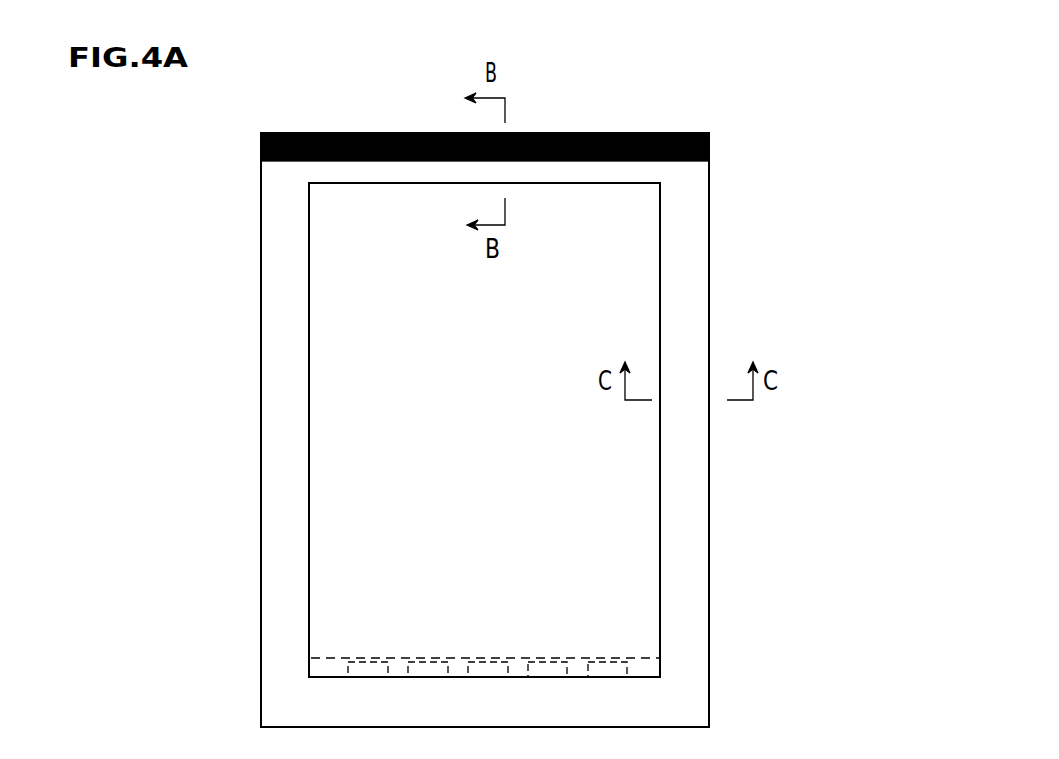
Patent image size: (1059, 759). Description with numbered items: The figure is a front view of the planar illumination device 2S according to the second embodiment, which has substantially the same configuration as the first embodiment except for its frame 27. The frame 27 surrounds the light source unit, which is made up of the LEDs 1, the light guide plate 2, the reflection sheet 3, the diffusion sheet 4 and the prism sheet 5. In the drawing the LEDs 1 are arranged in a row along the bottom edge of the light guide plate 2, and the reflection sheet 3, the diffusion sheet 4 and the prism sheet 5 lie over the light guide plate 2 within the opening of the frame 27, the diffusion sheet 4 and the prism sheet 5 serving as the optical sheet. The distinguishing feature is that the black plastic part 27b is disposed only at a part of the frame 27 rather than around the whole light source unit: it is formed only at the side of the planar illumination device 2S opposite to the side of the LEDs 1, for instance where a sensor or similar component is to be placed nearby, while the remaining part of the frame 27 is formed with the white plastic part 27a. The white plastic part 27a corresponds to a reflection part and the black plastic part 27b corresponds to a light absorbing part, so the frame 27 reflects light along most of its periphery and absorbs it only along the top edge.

The frame 27 is at (709, 216).
The white plastic part 27a is at (262, 234).
The black plastic part 27b is at (322, 133).
The planar illumination device 2S is at (553, 125).
The prism sheet 5 is at (340, 350).
The diffusion sheet 4 is at (340, 443).
The reflection sheet 3 is at (340, 520).
The light guide plate 2 is at (398, 658).
The LEDs 1 is at (553, 660).